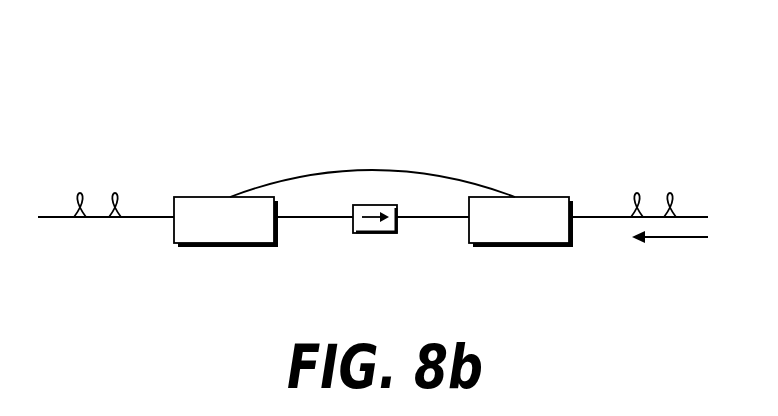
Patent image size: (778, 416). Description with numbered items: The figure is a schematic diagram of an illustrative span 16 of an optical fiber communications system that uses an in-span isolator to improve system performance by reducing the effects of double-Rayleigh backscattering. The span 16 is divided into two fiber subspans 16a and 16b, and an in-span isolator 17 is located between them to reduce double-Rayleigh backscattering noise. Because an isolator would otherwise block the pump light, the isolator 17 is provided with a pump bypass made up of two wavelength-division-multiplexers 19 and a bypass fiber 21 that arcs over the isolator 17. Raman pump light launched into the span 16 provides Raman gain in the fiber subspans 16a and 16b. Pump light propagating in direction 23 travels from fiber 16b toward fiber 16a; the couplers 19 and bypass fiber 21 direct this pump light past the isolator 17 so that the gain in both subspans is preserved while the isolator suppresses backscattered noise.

The span 16 is at (647, 81).
The fiber subspan 16a is at (106, 171).
The fiber subspan 16b is at (664, 176).
The in-span isolator 17 is at (372, 234).
The wavelength-division-multiplexer 19 is at (222, 247).
The bypass fiber 21 is at (382, 169).
The direction 23 is at (680, 239).